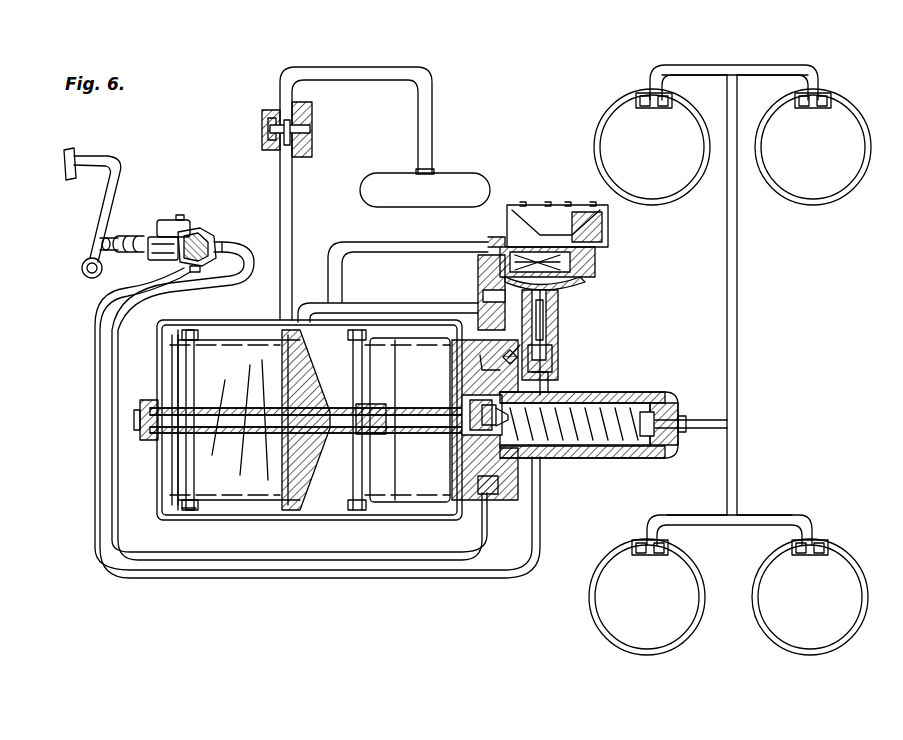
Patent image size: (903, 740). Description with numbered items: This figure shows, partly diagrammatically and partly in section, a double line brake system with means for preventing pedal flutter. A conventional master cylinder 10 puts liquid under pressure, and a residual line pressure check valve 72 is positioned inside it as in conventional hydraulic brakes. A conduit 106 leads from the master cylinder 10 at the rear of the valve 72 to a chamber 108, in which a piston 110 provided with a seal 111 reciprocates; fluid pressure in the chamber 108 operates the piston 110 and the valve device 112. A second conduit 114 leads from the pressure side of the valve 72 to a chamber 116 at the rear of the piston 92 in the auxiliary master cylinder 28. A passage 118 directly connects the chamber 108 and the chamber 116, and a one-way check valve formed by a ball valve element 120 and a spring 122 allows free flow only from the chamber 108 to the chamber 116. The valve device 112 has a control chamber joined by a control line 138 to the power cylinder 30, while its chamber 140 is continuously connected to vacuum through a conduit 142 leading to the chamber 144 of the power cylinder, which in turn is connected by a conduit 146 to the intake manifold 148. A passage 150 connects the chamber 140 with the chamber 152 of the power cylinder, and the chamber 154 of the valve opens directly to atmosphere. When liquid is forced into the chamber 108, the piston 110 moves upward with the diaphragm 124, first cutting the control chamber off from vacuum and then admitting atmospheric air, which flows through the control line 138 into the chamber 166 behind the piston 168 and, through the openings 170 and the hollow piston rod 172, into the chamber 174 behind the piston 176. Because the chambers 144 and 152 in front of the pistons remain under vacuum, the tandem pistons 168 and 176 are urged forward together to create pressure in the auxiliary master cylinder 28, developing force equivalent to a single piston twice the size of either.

The master cylinder 10 is at (164, 238).
The residual line pressure check valve 72 is at (196, 232).
The auxiliary master cylinder 28 is at (648, 388).
The power cylinder 30 is at (234, 321).
The piston 92 is at (502, 440).
The conduit 106 is at (95, 404).
The chamber 108 is at (552, 346).
The piston 110 is at (556, 320).
The seal 111 is at (552, 330).
The valve device 112 is at (598, 252).
The second conduit 114 is at (118, 398).
The chamber 116 is at (492, 494).
The passage 118 is at (470, 378).
The ball valve element 120 is at (508, 350).
The spring 122 is at (506, 352).
The diaphragm 124 is at (590, 280).
The control line 138 is at (350, 246).
The chamber 140 is at (506, 290).
The conduit 142 is at (354, 312).
The chamber 144 is at (268, 500).
The conduit 146 is at (293, 185).
The intake manifold 148 is at (446, 186).
The passage 150 is at (500, 306).
The chamber 152 is at (418, 508).
The chamber 154 is at (560, 215).
The chamber 166 is at (340, 505).
The piston 168 is at (396, 452).
The openings 170 is at (372, 408).
The hollow piston rod 172 is at (248, 395).
The chamber 174 is at (174, 508).
The piston 176 is at (200, 508).